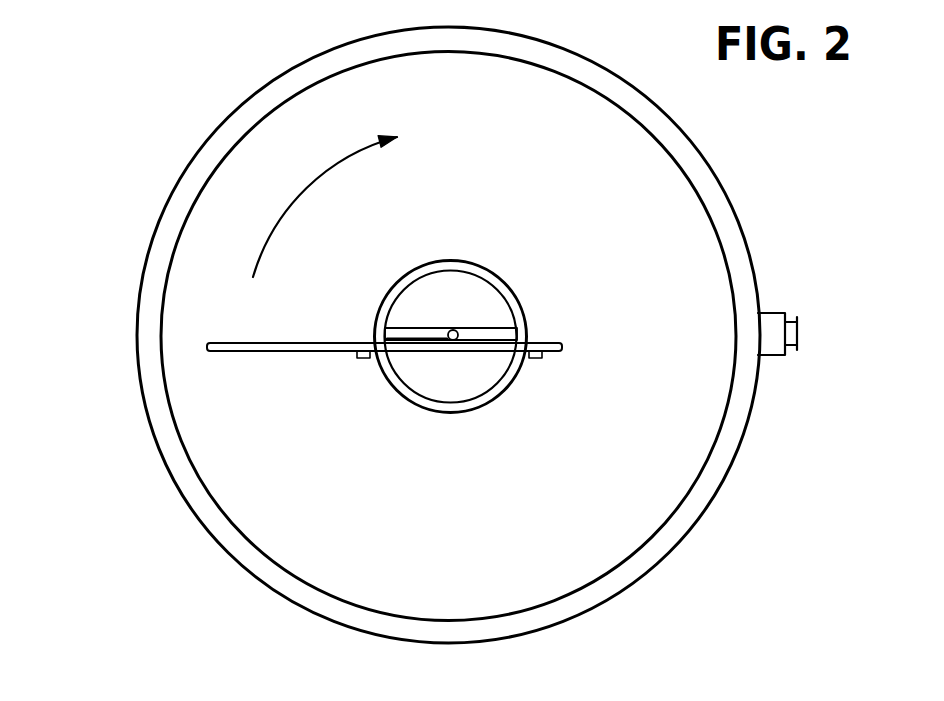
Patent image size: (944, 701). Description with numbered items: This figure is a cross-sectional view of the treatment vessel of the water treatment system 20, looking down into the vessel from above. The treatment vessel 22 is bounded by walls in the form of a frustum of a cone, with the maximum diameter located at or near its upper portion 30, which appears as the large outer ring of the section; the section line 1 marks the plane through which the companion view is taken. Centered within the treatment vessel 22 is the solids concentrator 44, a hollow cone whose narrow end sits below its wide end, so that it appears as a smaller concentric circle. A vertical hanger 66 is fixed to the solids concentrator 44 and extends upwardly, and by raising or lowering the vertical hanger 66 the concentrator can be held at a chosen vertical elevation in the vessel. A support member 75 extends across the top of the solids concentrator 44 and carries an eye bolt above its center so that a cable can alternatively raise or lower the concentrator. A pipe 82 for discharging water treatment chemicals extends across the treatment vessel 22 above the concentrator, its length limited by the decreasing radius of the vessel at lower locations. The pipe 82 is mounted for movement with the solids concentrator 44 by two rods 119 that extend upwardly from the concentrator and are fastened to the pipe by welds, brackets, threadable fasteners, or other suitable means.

The section line 1- 1 is at (80, 433).
The water treatment system 20 is at (180, 564).
The treatment vessel 22 is at (749, 251).
The upper portion 30 is at (722, 184).
The solids concentrator 44 is at (502, 393).
The vertical hanger 66 is at (460, 335).
The support member 75 is at (427, 329).
The pipe 82 is at (303, 343).
The rods 119 is at (362, 360).